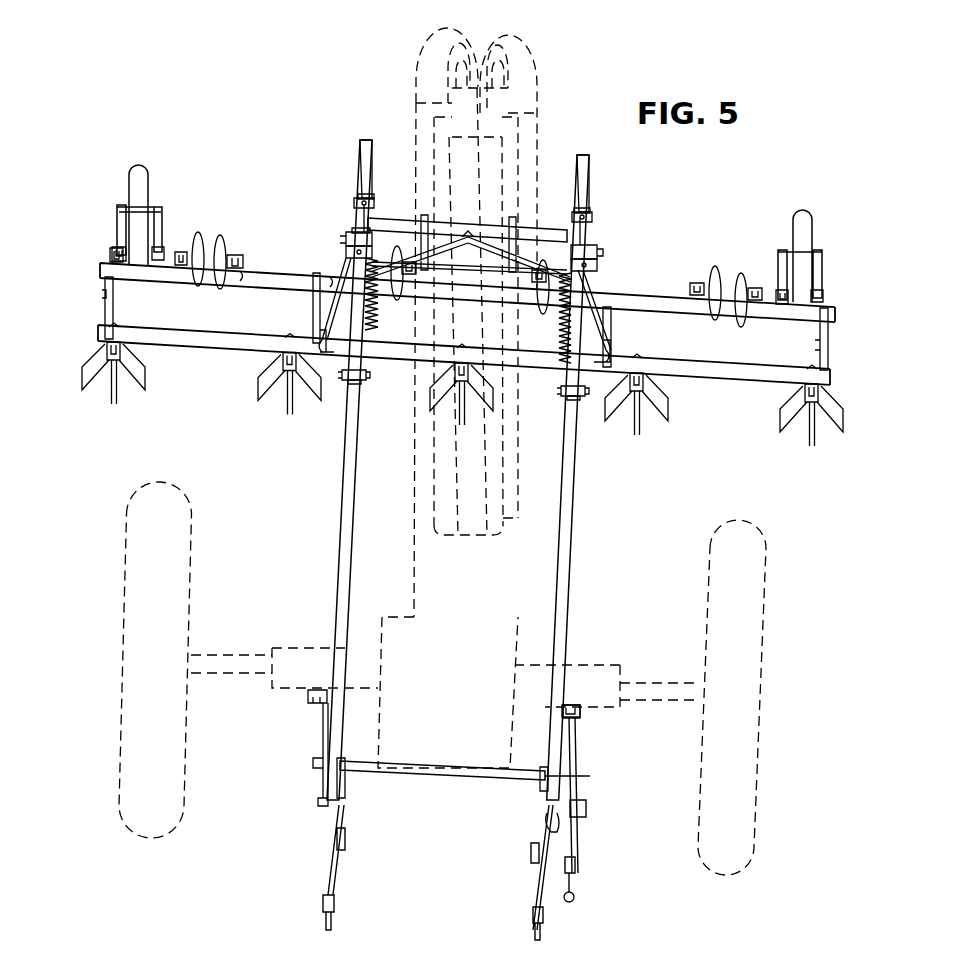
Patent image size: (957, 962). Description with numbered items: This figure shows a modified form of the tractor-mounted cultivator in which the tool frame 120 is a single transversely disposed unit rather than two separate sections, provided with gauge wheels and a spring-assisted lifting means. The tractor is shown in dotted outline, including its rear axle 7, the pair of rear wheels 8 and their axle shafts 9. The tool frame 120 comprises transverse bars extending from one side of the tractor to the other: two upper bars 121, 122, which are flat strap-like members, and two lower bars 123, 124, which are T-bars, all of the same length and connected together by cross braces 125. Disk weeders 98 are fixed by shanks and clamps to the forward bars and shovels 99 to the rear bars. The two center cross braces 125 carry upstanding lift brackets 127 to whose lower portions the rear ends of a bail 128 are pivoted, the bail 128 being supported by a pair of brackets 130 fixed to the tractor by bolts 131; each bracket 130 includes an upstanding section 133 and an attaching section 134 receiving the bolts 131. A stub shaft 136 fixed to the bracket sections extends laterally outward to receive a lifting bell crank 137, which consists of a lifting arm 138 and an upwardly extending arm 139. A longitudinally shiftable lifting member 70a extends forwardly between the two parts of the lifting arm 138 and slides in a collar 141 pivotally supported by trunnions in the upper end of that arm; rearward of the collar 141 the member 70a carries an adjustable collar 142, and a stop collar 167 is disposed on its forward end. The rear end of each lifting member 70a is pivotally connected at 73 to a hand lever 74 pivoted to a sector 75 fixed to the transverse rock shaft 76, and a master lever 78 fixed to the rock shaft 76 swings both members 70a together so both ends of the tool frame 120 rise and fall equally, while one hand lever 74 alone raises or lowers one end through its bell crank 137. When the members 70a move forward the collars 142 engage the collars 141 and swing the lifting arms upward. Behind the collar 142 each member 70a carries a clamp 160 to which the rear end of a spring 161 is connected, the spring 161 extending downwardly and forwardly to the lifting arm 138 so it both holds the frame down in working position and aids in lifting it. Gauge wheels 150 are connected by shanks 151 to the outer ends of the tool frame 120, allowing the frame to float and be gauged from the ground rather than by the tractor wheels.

The rear axle 7 is at (379, 643).
The rear wheels 8 is at (187, 552).
The axle shafts 9 is at (230, 657).
The lifting member 70a is at (349, 468).
The pivotal connection 73 is at (319, 801).
The hand lever 74 is at (336, 838).
The sector 75 is at (344, 800).
The rock shaft 76 is at (461, 776).
The master lever 78 is at (583, 832).
The disk weeders 98 is at (210, 237).
The shovels 99 is at (258, 378).
The tool frame 120 is at (297, 261).
The upper bar 121 is at (744, 368).
The upper bar 122 is at (653, 298).
The lower bar 123 is at (214, 342).
The lower bar 124 is at (260, 282).
The cross braces 125 is at (106, 284).
The lift brackets 127 is at (333, 346).
The bail 128 is at (480, 231).
The brackets 130 is at (404, 205).
The bolts 131 is at (425, 215).
The upstanding section 133 is at (355, 203).
The attaching section 134 is at (430, 265).
The stub shaft 136 is at (370, 190).
The lifting bell crank 137 is at (360, 378).
The lifting arm 138 is at (320, 310).
The upwardly extending arm 139 is at (347, 245).
The collar 141 is at (346, 232).
The collar 142 is at (347, 253).
The gauge wheels 150 is at (148, 178).
The shanks 151 is at (143, 265).
The clamp 160 is at (347, 381).
The spring 161 is at (366, 335).
The stop collar 167 is at (360, 198).